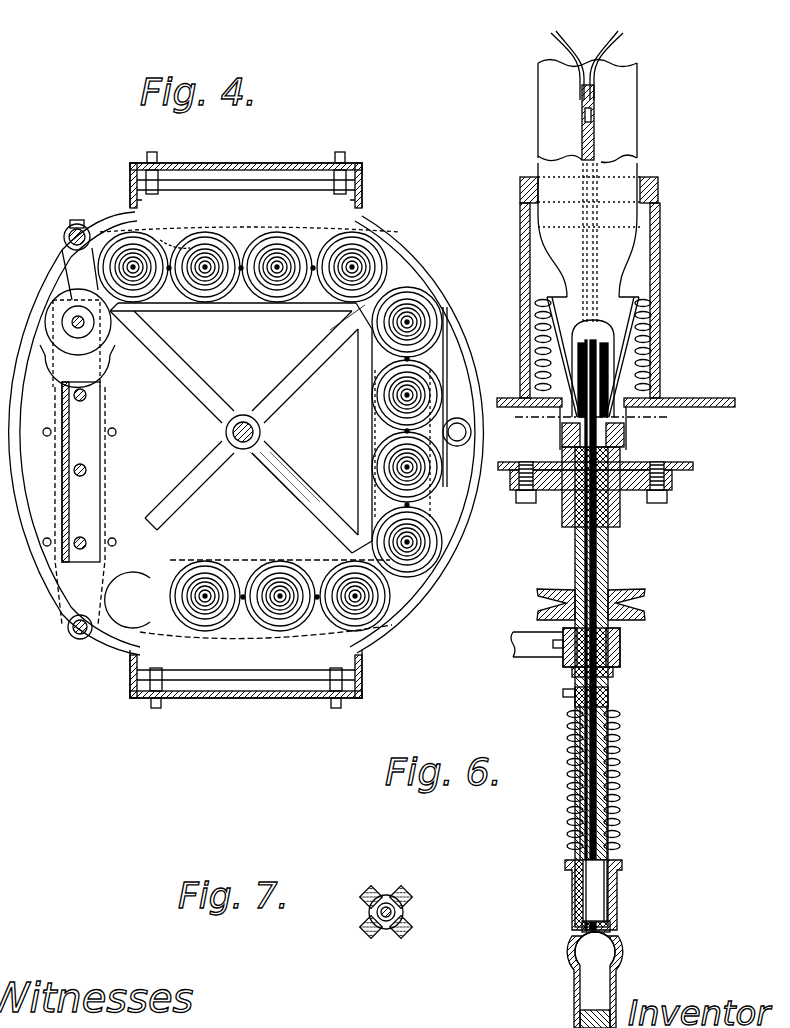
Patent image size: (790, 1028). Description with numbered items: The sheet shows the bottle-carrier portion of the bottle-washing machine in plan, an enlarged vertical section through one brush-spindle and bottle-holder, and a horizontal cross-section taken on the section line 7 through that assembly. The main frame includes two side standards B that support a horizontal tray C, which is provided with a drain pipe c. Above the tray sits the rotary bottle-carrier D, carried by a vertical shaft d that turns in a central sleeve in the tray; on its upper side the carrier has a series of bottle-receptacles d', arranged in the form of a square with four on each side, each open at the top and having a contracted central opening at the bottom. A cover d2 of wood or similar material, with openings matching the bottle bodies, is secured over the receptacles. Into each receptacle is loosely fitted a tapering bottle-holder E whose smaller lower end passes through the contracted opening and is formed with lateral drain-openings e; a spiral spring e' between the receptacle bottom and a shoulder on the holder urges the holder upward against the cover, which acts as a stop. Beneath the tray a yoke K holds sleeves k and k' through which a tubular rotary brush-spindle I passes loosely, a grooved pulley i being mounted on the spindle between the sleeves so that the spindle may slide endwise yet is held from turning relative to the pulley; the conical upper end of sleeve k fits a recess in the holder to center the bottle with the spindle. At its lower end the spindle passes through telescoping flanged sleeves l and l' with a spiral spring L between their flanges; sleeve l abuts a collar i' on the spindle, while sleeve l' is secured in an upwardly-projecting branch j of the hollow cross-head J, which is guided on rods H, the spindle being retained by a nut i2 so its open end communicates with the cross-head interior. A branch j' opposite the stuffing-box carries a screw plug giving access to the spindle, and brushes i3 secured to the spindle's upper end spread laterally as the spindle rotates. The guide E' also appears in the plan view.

In FIG. 4, the side standards B is at (226, 163).
In FIG. 4, the tray C is at (405, 270).
In FIG. 6, the tray C is at (670, 465).
In FIG. 4, the rotary bottle-carrier D is at (272, 207).
In FIG. 6, the rotary bottle-carrier D is at (700, 398).
In FIG. 4, the vertical shaft d is at (241, 428).
In FIG. 4, the bottle-receptacles d' is at (222, 477).
In FIG. 6, the bottle-receptacles d' is at (574, 229).
In FIG. 4, the cover d2 is at (260, 285).
In FIG. 6, the cover d2 is at (520, 190).
In FIG. 4, the bottle-holders E is at (341, 440).
In FIG. 6, the bottle-holders E is at (616, 251).
In FIG. 4, the guide E' is at (175, 236).
In FIG. 4, the rods H is at (64, 240).
In FIG. 4, the yoke K is at (60, 258).
In FIG. 6, the yoke K is at (615, 510).
In FIG. 4, the sleeve k is at (57, 442).
In FIG. 6, the sleeve k is at (606, 635).
In FIG. 4, the drain pipe c is at (457, 432).
In FIG. 6, the brushes or flexible wipers i3 is at (612, 46).
In FIG. 6, the spiral springs e' is at (610, 345).
In FIG. 6, the section line 7 is at (597, 419).
In FIG. 6, the lateral drain-openings e is at (589, 385).
In FIG. 7, the lateral drain-openings e is at (381, 907).
In FIG. 6, the grooved pulleys i is at (601, 604).
In FIG. 6, the sleeve k' is at (610, 647).
In FIG. 6, the rotary tube I is at (613, 680).
In FIG. 7, the rotary tube I is at (404, 914).
In FIG. 6, the collar i' is at (604, 696).
In FIG. 6, the flanged sleeve l is at (605, 744).
In FIG. 6, the spiral spring L is at (620, 778).
In FIG. 6, the flanged sleeve l' is at (608, 816).
In FIG. 6, the upwardly-projecting branch j is at (605, 895).
In FIG. 6, the nut or collar i2 is at (612, 926).
In FIG. 6, the cross-head J is at (568, 960).
In FIG. 6, the branch j' is at (576, 1014).